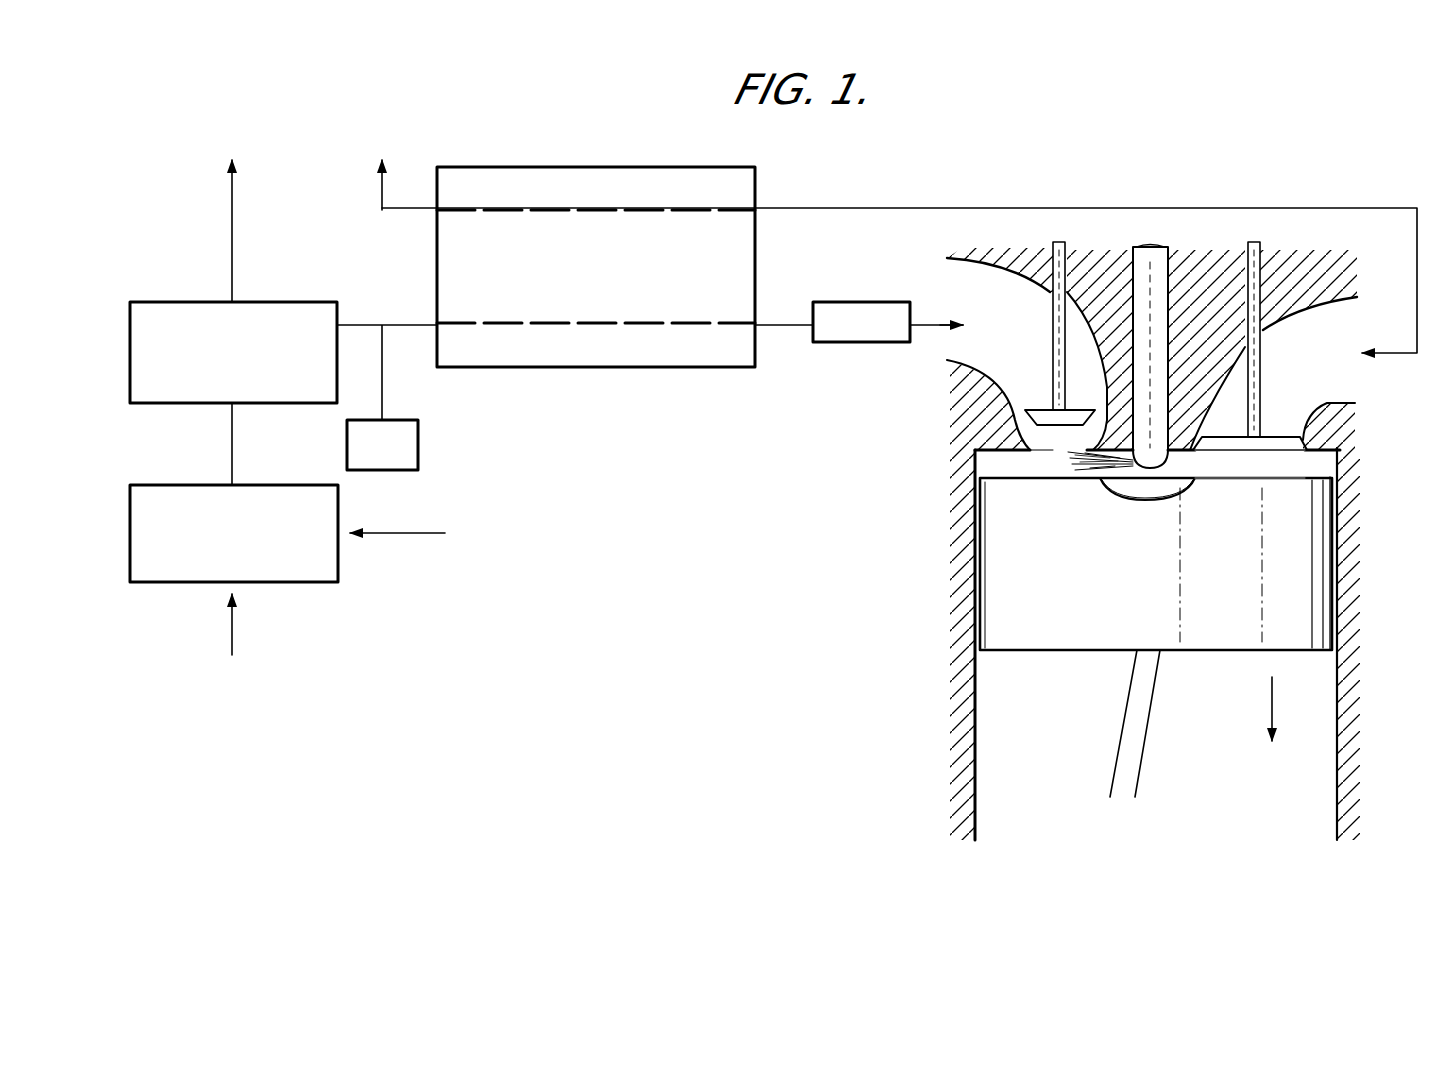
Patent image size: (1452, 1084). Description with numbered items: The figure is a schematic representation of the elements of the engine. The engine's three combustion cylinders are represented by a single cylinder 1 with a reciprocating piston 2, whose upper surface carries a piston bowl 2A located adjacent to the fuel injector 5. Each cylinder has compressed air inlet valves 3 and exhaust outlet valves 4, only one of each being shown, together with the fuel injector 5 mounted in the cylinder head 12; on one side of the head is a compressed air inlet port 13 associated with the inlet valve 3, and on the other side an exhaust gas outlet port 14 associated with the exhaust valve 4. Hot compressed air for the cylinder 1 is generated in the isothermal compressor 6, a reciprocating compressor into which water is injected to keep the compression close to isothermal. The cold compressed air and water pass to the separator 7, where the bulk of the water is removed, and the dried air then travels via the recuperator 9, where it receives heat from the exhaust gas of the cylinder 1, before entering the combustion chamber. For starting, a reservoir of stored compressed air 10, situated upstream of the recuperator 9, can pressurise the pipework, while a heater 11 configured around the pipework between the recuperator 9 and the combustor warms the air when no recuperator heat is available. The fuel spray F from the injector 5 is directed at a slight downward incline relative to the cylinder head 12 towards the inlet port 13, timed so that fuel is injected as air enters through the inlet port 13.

The cylinder 1 is at (1346, 729).
The reciprocating piston 2 is at (1000, 565).
The piston bowl 2A is at (1150, 490).
The compressed air inlet valve 3 is at (1053, 240).
The exhaust outlet valve 4 is at (1247, 253).
The fuel injector 5 is at (1150, 252).
The isothermal compressor 6 is at (238, 554).
The separator 7 is at (238, 374).
The recuperator 9 is at (594, 288).
The reservoir of stored compressed air 10 is at (382, 461).
The heater 11 is at (858, 339).
The cylinder head 12 is at (1335, 463).
The compressed air inlet port 13 is at (1053, 450).
The exhaust gas outlet port 14 is at (1307, 452).
The fuel spray F is at (1090, 470).